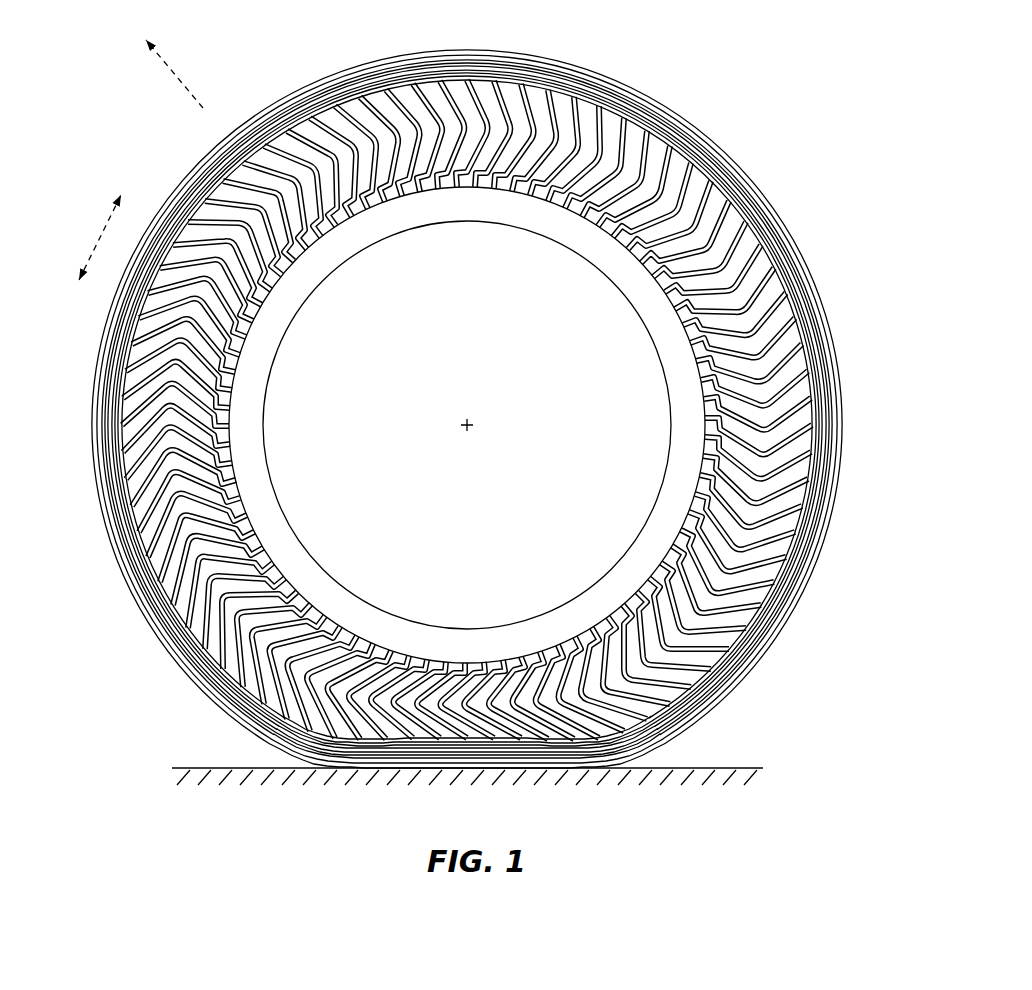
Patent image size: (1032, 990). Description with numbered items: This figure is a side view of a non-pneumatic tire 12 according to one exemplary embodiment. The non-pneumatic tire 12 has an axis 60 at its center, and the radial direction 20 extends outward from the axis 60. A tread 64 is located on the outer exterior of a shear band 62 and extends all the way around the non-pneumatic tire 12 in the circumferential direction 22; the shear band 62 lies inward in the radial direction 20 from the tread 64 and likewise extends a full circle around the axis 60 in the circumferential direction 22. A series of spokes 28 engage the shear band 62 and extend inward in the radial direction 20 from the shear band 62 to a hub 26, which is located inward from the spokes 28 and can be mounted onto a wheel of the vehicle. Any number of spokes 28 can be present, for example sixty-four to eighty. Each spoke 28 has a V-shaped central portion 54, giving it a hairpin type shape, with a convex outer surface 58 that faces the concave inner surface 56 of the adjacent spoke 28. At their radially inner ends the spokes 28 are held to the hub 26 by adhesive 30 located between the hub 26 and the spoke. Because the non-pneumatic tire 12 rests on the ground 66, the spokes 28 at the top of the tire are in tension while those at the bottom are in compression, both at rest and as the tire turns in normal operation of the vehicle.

The non-pneumatic tire 12 is at (830, 70).
The radial direction 20 is at (170, 70).
The circumferential direction 22 is at (100, 226).
The hub 26 is at (270, 505).
The spokes 28 is at (782, 318).
The adhesive 30 is at (303, 598).
The central portion 54 is at (230, 597).
The concave inner surface 56 is at (237, 603).
The convex outer surface 58 is at (227, 593).
The axis 60 is at (461, 430).
The shear band 62 is at (753, 642).
The tread 64 is at (675, 102).
The ground 66 is at (737, 765).